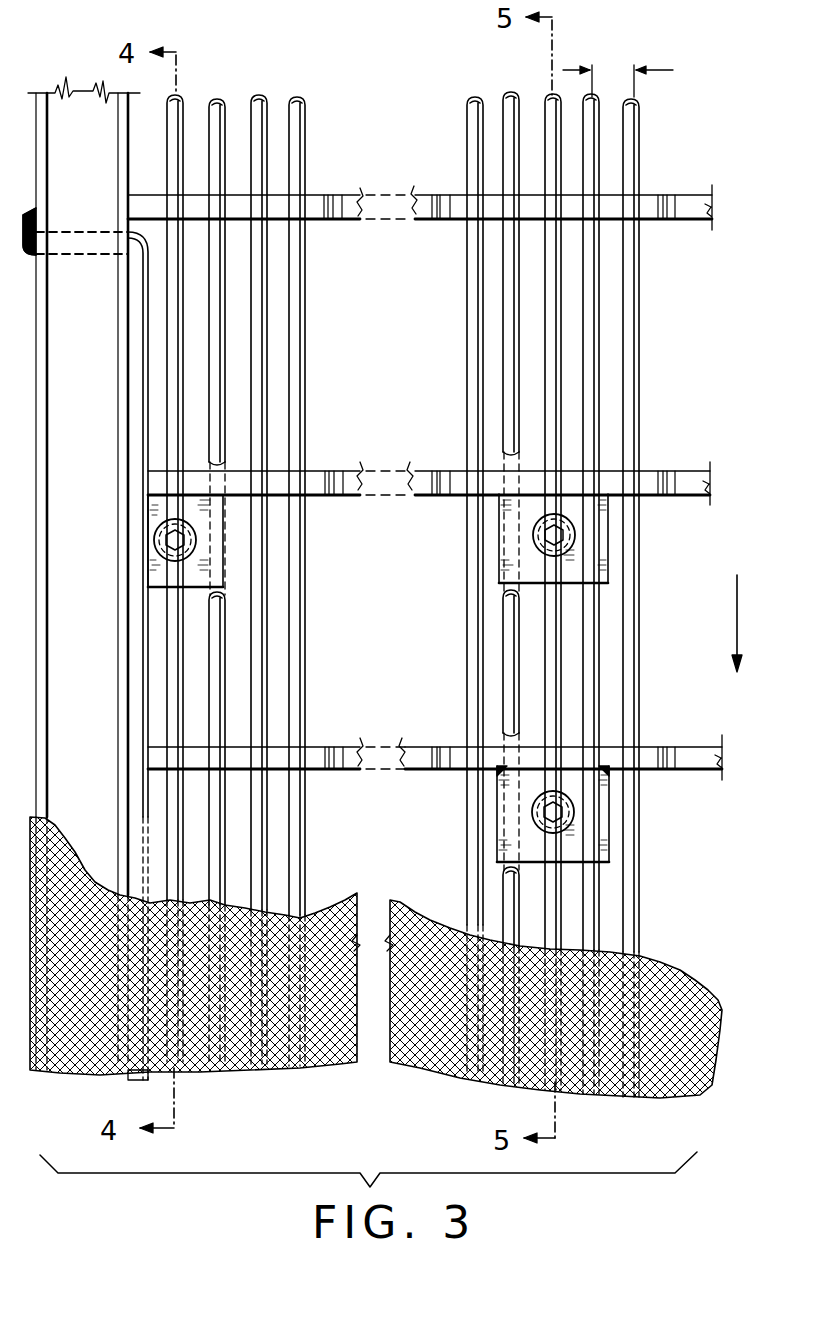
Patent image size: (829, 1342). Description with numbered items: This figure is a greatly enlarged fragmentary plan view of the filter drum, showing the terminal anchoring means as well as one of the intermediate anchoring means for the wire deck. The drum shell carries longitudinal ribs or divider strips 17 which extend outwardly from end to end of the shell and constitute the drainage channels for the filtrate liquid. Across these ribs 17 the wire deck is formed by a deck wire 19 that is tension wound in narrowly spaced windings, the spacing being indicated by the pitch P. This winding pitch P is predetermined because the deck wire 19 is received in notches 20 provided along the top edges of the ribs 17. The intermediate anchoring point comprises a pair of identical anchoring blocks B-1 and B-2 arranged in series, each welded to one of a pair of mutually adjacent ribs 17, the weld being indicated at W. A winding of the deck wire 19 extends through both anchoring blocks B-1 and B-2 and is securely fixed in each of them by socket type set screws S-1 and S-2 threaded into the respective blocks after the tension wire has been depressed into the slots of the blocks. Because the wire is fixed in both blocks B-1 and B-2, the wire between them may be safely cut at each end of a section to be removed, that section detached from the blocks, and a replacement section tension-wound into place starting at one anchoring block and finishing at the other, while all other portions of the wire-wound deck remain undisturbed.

The longitudinal ribs 17 is at (313, 208).
The deck wire 19 is at (295, 603).
The notches 20 is at (333, 215).
The socket type set screw S-1 is at (535, 812).
The socket type set screw S-2 is at (535, 535).
The anchoring block B-1 is at (605, 818).
The anchoring block B-2 is at (605, 550).
The weld W is at (612, 770).
The pitch P is at (618, 79).